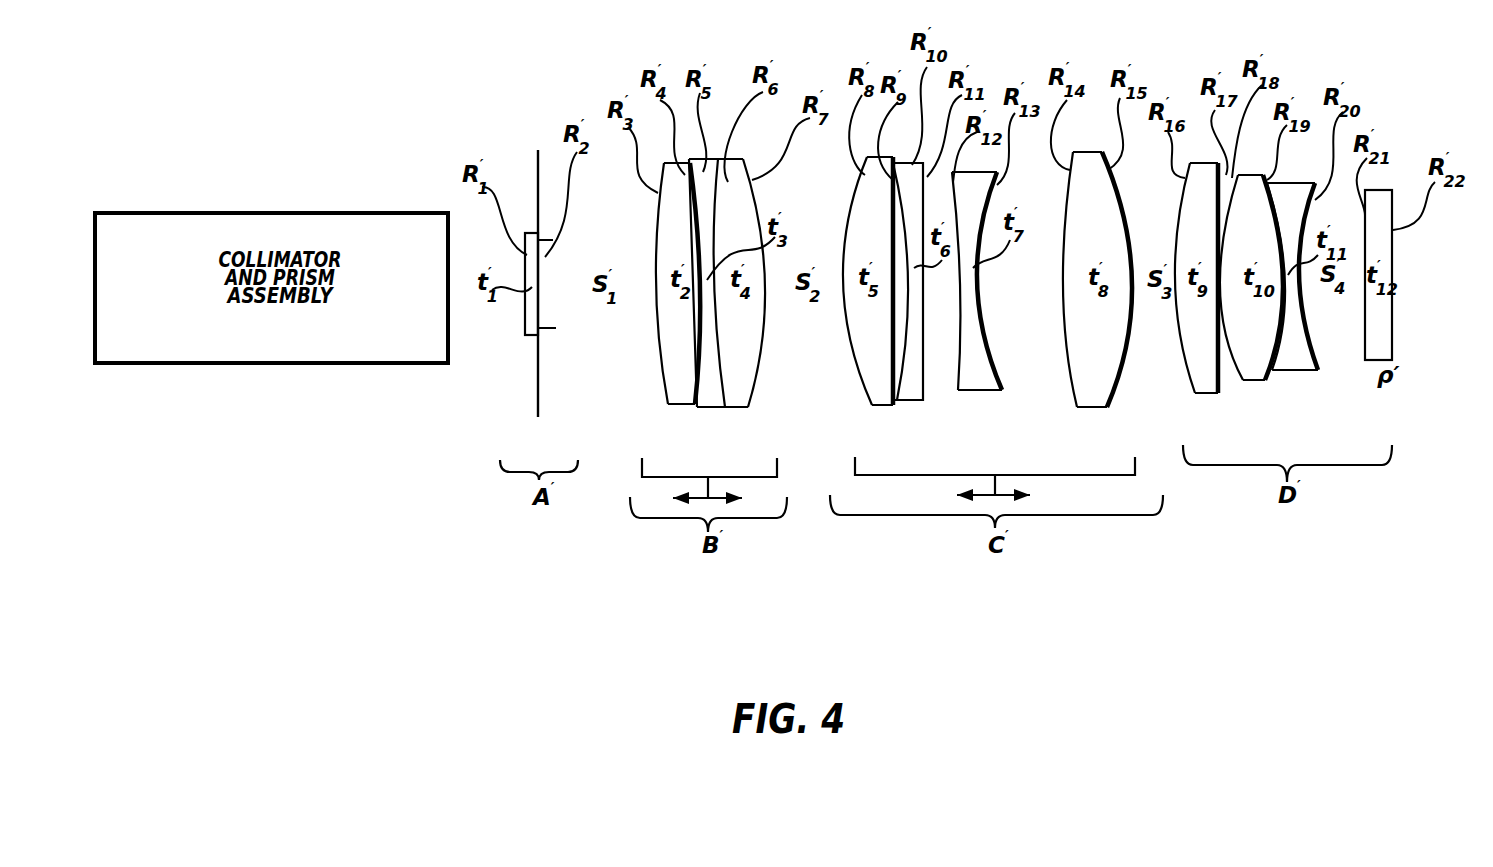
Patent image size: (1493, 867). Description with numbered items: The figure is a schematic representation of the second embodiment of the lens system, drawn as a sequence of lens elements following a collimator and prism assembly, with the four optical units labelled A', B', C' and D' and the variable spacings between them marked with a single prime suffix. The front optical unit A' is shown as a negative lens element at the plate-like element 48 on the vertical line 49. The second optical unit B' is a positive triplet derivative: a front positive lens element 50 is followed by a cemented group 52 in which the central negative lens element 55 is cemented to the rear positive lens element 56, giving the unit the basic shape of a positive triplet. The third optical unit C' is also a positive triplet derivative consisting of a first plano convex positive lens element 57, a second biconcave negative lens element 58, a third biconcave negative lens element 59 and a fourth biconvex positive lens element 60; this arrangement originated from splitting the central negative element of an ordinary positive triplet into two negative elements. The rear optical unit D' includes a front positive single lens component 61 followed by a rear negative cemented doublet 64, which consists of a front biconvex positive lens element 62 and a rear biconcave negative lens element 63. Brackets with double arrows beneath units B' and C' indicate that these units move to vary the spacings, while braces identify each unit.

The plate 48 is at (532, 317).
The optical axis line 49 is at (540, 365).
The first lens element of group B 50 is at (672, 378).
The cemented doublet of group B 52 is at (757, 316).
The central negative lens element 55 is at (707, 378).
The rear positive lens element 56 is at (772, 283).
The plano convex positive lens element 57 is at (870, 382).
The biconcave negative lens element 58 is at (908, 390).
The biconcave negative lens element 59 is at (975, 383).
The biconvex positive lens element 60 is at (1106, 373).
The first lens element of group D 61 is at (1198, 383).
The biconvex element of doublet 64 62 is at (1264, 353).
The meniscus element of doublet 64 63 is at (1312, 276).
The doublet of group D 64 is at (1289, 308).